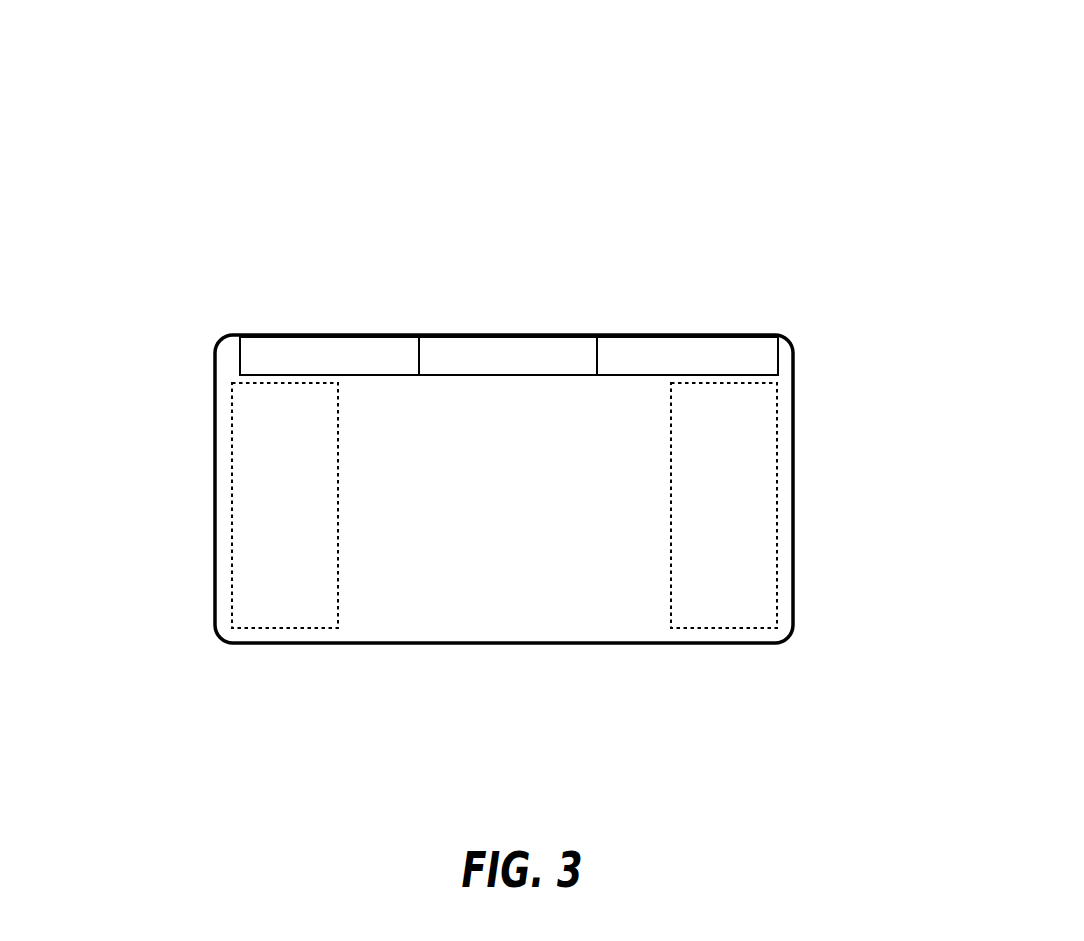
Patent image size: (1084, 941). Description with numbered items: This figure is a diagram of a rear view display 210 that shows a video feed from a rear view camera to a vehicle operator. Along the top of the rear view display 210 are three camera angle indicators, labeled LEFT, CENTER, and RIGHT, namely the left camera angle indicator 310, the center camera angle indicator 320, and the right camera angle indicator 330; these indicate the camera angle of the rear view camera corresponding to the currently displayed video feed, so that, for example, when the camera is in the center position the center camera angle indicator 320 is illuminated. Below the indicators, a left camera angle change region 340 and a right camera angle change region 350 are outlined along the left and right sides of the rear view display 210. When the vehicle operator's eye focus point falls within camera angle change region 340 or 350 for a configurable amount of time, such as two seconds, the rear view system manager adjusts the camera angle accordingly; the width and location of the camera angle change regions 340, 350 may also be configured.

The rear view display 210 is at (277, 80).
The left camera angle indicator 310 is at (288, 356).
The center camera angle indicator 320 is at (451, 357).
The right camera angle indicator 330 is at (638, 355).
The left camera angle change region 340 is at (232, 472).
The right camera angle change region 350 is at (777, 472).